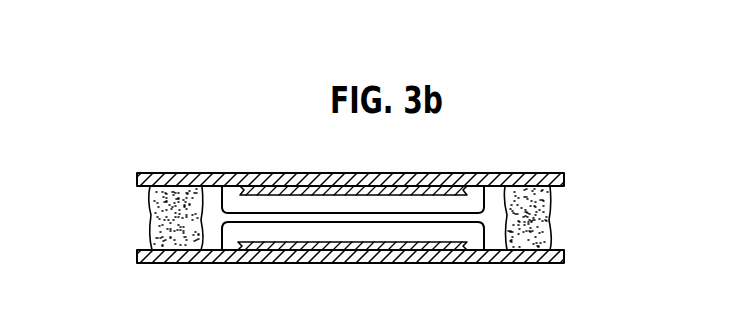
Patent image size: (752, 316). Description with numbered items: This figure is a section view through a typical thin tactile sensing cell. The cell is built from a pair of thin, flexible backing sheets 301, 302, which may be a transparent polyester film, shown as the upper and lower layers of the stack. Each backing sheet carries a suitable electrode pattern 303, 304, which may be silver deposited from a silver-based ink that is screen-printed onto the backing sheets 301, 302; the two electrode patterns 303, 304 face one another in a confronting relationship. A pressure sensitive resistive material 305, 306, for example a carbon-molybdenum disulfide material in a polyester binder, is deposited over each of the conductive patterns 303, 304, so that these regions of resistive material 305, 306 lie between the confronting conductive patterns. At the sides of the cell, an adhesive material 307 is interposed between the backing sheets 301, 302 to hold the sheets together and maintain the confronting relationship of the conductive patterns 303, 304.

The backing sheet 301 is at (566, 175).
The backing sheet 302 is at (566, 258).
The electrode pattern 303 is at (239, 195).
The electrode pattern 304 is at (240, 245).
The pressure sensitive resistive material 305 is at (466, 192).
The pressure sensitive resistive material 306 is at (468, 244).
The adhesive material 307 is at (150, 213).